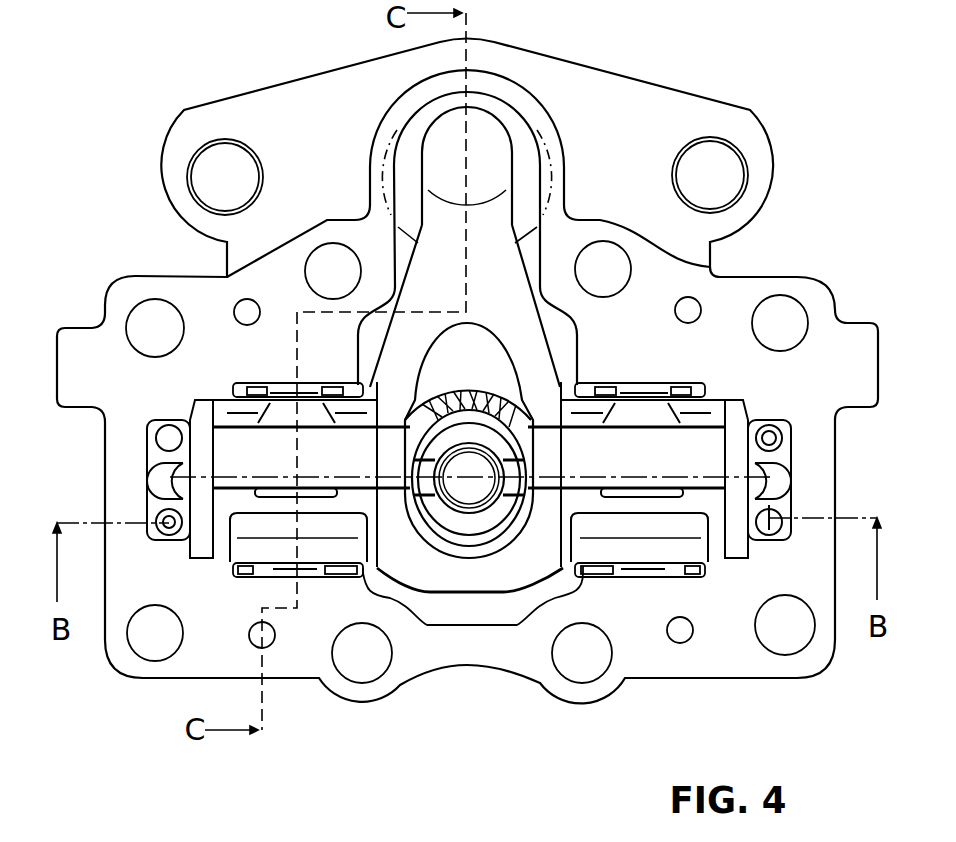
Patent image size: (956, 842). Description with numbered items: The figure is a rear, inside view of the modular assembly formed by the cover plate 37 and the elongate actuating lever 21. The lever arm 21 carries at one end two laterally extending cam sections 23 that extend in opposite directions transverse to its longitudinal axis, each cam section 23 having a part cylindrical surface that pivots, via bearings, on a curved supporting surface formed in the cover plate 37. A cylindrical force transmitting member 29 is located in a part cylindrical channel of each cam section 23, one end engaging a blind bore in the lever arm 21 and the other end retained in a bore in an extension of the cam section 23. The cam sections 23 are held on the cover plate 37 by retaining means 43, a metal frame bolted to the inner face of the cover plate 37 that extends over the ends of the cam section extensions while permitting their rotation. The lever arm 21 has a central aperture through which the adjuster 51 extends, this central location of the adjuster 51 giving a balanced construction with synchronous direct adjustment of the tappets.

The elongate actuating lever 21 is at (515, 303).
The cam sections 23 is at (228, 517).
The cylindrical force transmitting member 29 is at (232, 458).
The cover plate 37 is at (203, 325).
The retaining means 43 is at (203, 522).
The adjuster 51 is at (488, 518).